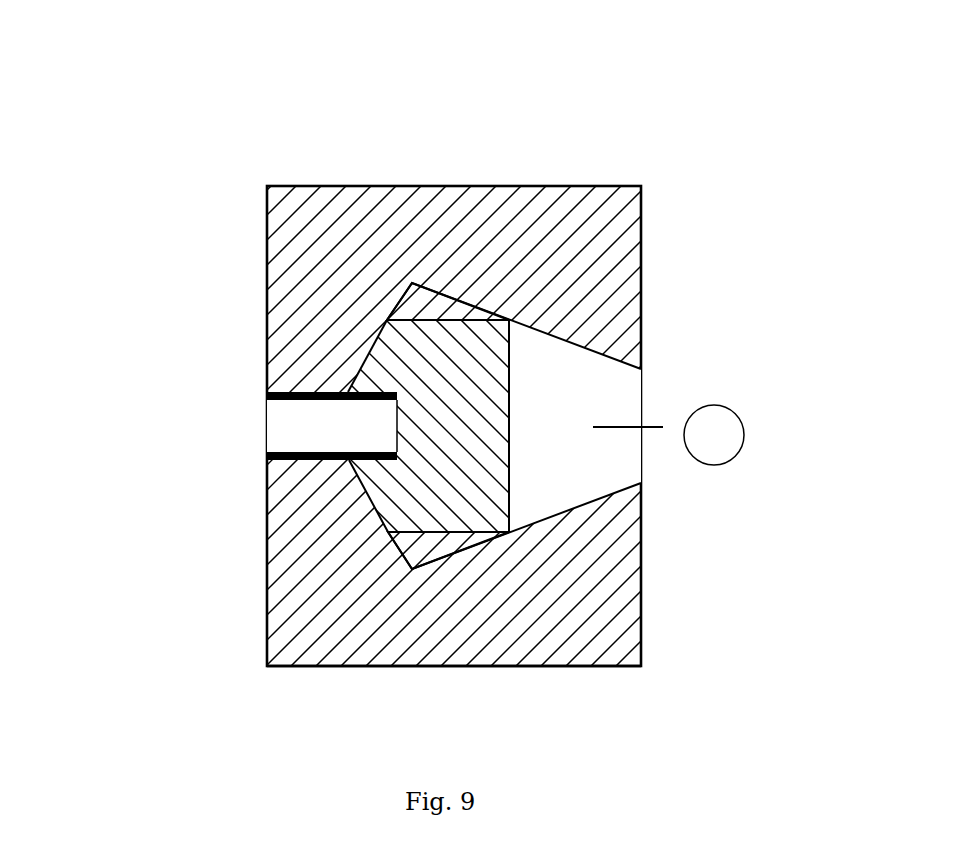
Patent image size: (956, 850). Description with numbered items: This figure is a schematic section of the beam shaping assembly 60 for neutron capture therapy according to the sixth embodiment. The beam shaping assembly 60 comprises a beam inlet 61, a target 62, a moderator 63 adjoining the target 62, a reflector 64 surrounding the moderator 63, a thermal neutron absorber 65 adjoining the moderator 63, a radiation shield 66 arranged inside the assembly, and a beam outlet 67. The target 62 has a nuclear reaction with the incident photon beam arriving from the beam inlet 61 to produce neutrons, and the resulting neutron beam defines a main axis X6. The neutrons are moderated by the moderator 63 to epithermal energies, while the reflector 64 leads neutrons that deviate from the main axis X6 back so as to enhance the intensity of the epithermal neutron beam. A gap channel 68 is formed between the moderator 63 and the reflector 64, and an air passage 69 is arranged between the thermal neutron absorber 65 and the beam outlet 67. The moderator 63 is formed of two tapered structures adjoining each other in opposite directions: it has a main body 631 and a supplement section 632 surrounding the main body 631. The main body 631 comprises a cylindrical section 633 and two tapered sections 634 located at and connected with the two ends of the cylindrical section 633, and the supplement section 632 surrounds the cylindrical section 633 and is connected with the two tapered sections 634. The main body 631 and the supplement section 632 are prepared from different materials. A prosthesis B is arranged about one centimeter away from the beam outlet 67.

The beam shaping assembly 60 is at (328, 80).
The beam inlet 61 is at (267, 395).
The target 62 is at (397, 426).
The moderator 63 is at (143, 560).
The main body 631 is at (418, 495).
The supplement section 632 is at (420, 547).
The cylindrical section 633 is at (410, 282).
The tapered sections 634 is at (372, 350).
The reflector 64 is at (402, 623).
The thermal neutron absorber 65 is at (510, 430).
The radiation shield 66 is at (652, 228).
The beam outlet 67 is at (615, 468).
The gap channel 68 is at (447, 307).
The air passage 69 is at (543, 377).
The main axis X6 is at (642, 397).
The prosthesis B is at (715, 405).